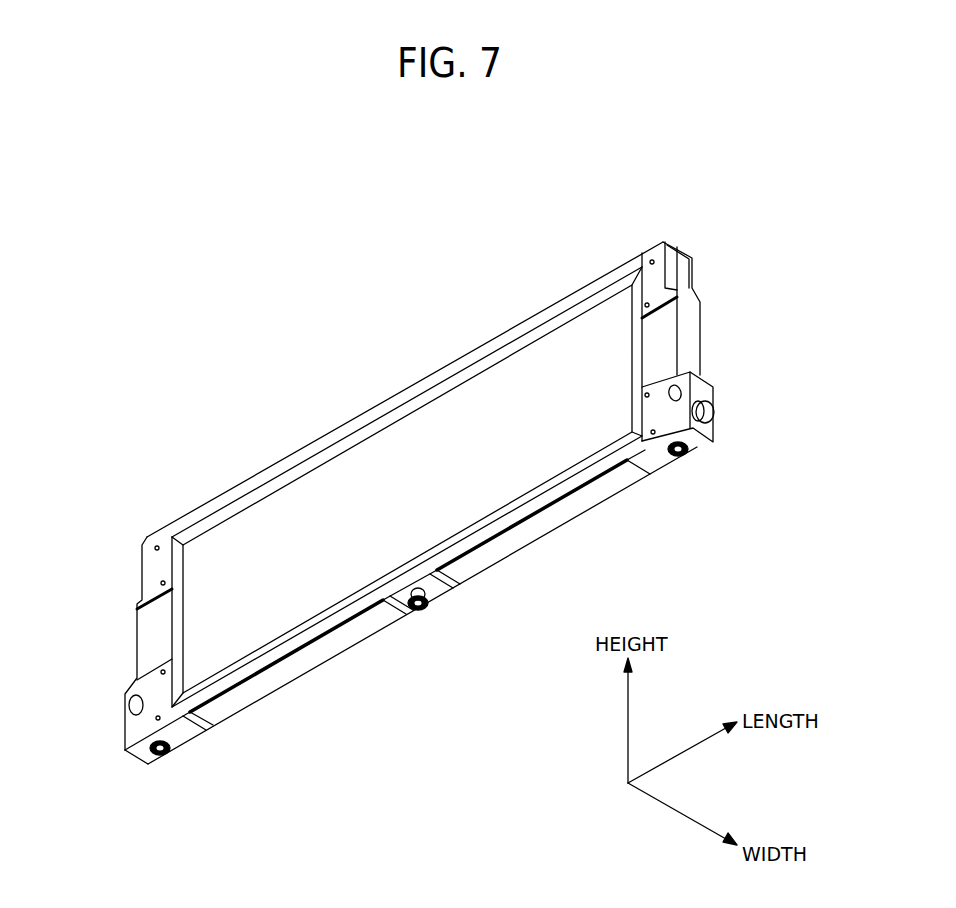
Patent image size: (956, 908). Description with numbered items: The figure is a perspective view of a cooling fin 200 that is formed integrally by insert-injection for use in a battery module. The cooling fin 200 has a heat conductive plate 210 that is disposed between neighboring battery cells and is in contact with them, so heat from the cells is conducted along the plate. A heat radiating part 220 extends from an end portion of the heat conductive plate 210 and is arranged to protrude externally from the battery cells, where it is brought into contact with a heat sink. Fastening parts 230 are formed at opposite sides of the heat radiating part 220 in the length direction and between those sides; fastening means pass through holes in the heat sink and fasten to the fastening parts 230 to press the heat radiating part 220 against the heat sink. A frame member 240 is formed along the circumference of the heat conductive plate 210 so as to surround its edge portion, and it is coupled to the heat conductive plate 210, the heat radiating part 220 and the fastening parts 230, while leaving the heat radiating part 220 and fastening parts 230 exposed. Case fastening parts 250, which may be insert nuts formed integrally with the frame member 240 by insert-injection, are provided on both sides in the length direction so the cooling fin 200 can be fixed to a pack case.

The cooling fin 200 is at (645, 256).
The heat conductive plate 210 is at (215, 630).
The heat radiating part 220 is at (293, 670).
The fastening parts 230 is at (150, 752).
The frame member 240 is at (155, 700).
The case fastening parts 250 is at (708, 412).